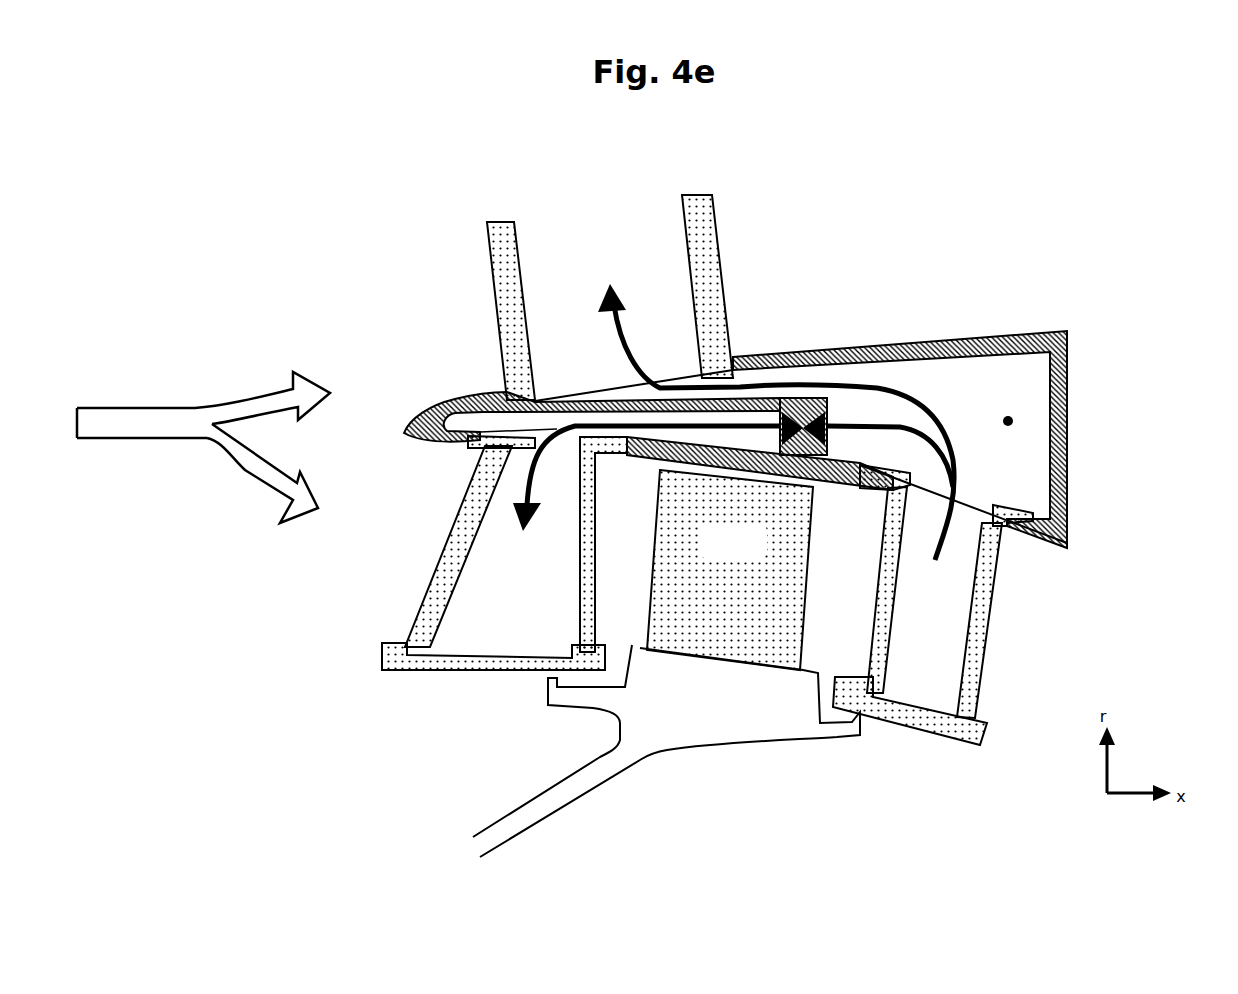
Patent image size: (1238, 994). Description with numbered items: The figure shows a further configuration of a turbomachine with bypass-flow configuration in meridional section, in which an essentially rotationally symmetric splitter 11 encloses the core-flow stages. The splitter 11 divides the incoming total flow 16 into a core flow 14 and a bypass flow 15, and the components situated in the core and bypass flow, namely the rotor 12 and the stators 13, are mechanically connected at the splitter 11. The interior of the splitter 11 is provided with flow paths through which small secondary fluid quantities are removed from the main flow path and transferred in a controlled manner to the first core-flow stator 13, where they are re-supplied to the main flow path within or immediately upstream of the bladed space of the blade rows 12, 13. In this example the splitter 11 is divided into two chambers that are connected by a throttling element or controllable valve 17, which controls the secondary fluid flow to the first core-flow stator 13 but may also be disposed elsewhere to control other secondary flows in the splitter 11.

The splitter 11 is at (1012, 420).
The rotor 12 is at (780, 582).
The stator 13 is at (713, 317).
The core flow 14 is at (253, 405).
The bypass flow 15 is at (255, 470).
The total flow 16 is at (117, 425).
The controllable valve 17 is at (840, 416).